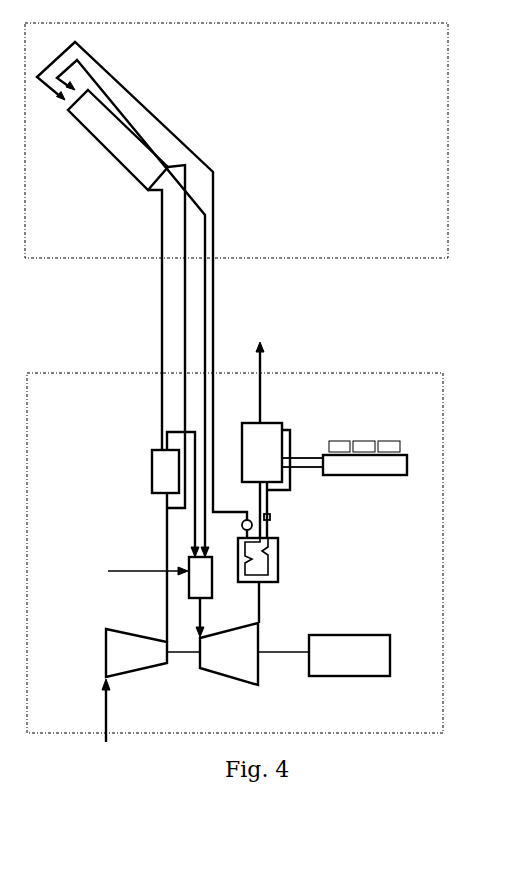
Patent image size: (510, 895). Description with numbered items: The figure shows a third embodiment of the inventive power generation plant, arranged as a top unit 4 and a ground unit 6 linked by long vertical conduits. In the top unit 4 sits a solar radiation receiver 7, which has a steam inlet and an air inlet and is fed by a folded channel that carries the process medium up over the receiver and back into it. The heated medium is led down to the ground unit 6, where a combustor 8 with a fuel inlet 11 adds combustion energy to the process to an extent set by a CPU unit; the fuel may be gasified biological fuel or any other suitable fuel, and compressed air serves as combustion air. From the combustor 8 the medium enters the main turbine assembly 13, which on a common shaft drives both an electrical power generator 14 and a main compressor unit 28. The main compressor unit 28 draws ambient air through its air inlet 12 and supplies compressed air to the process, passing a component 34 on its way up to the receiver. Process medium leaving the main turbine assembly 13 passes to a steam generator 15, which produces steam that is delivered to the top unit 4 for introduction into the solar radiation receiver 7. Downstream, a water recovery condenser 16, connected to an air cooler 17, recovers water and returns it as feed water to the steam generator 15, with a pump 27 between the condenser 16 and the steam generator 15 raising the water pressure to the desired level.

The top unit 4 is at (448, 173).
The ground unit 6 is at (443, 541).
The solar radiation receiver 7 is at (108, 140).
The combustor 8 is at (212, 588).
The fuel inlet 11 is at (132, 575).
The air inlet 12 is at (100, 718).
The main turbine assembly 13 is at (227, 667).
The electrical power generator 14 is at (372, 642).
The steam generator 15 is at (272, 562).
The water recovery condenser 16 is at (272, 438).
The air cooler 17 is at (360, 468).
The pump 27 is at (272, 517).
The main compressor unit 28 is at (132, 665).
The recuperator 34 is at (150, 477).